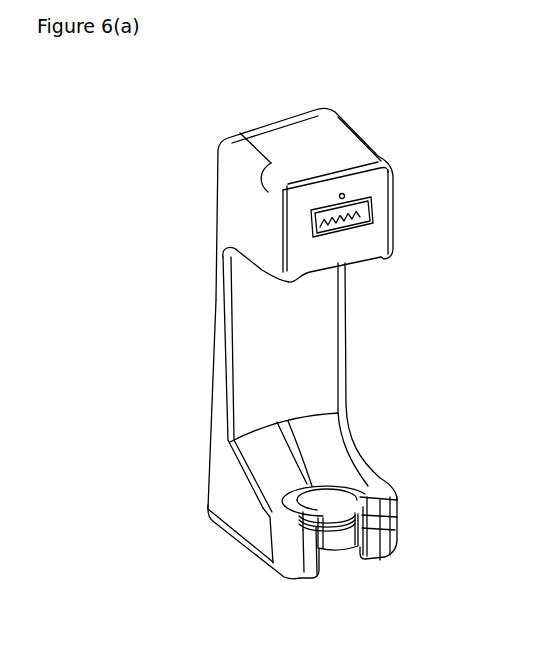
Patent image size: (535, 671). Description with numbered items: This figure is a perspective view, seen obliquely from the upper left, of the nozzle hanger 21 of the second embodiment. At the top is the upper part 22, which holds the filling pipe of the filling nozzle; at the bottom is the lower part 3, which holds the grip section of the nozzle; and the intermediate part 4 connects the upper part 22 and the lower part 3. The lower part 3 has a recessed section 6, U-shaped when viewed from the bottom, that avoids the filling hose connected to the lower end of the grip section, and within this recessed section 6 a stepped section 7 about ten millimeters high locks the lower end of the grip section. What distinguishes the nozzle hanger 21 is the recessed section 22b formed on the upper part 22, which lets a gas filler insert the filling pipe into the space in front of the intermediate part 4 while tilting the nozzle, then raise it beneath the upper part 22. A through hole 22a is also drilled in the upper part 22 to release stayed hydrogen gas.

The nozzle hanger 21 is at (190, 103).
The upper part 22 is at (357, 124).
The through hole 22a is at (346, 195).
The recessed section 22b is at (363, 260).
The intermediate part 4 is at (212, 307).
The lower part 3 is at (232, 538).
The stepped section 7 is at (342, 502).
The recessed section 6 is at (343, 561).